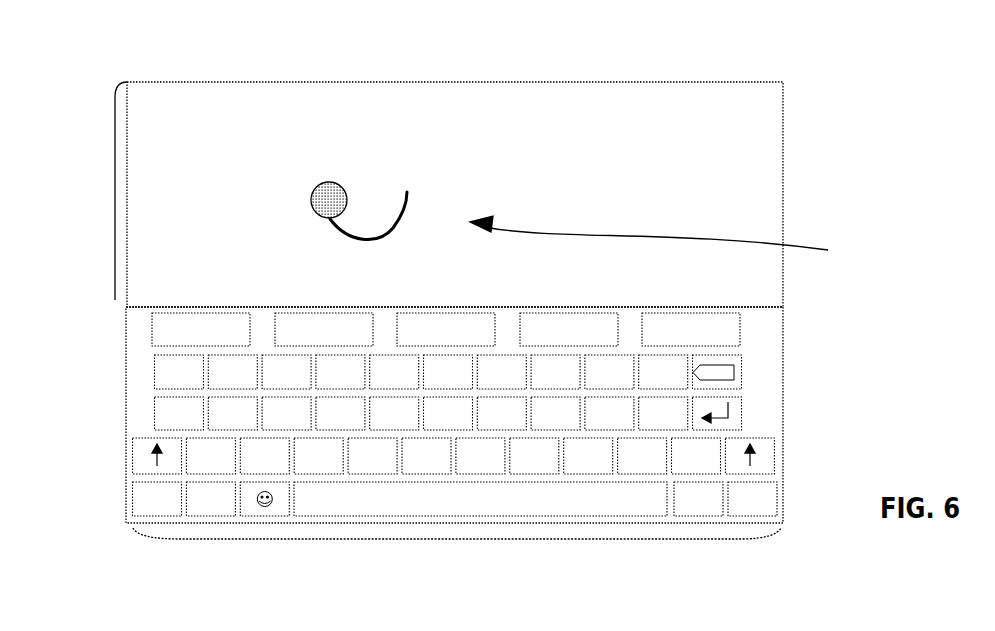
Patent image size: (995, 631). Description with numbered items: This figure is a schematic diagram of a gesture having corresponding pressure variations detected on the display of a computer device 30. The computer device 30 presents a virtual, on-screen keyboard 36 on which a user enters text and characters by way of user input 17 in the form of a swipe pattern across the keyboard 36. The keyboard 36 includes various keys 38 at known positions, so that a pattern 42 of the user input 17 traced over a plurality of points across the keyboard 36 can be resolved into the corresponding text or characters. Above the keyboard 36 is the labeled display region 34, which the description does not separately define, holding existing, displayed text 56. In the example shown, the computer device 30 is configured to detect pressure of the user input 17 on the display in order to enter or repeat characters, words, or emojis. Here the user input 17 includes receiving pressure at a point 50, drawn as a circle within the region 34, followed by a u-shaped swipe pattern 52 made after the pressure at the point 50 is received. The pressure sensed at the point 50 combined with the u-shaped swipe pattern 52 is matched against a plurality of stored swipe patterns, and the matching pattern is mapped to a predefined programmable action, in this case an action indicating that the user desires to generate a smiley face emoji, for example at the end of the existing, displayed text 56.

The user input 17 is at (667, 238).
The computer device 30 is at (848, 191).
The display region 34 is at (114, 191).
The keyboard 36 is at (126, 517).
The keys 38 is at (450, 541).
The swipe pattern 42 is at (785, 307).
The point 50 is at (336, 182).
The u-shaped swipe pattern 52 is at (408, 219).
The displayed text 56 is at (647, 92).